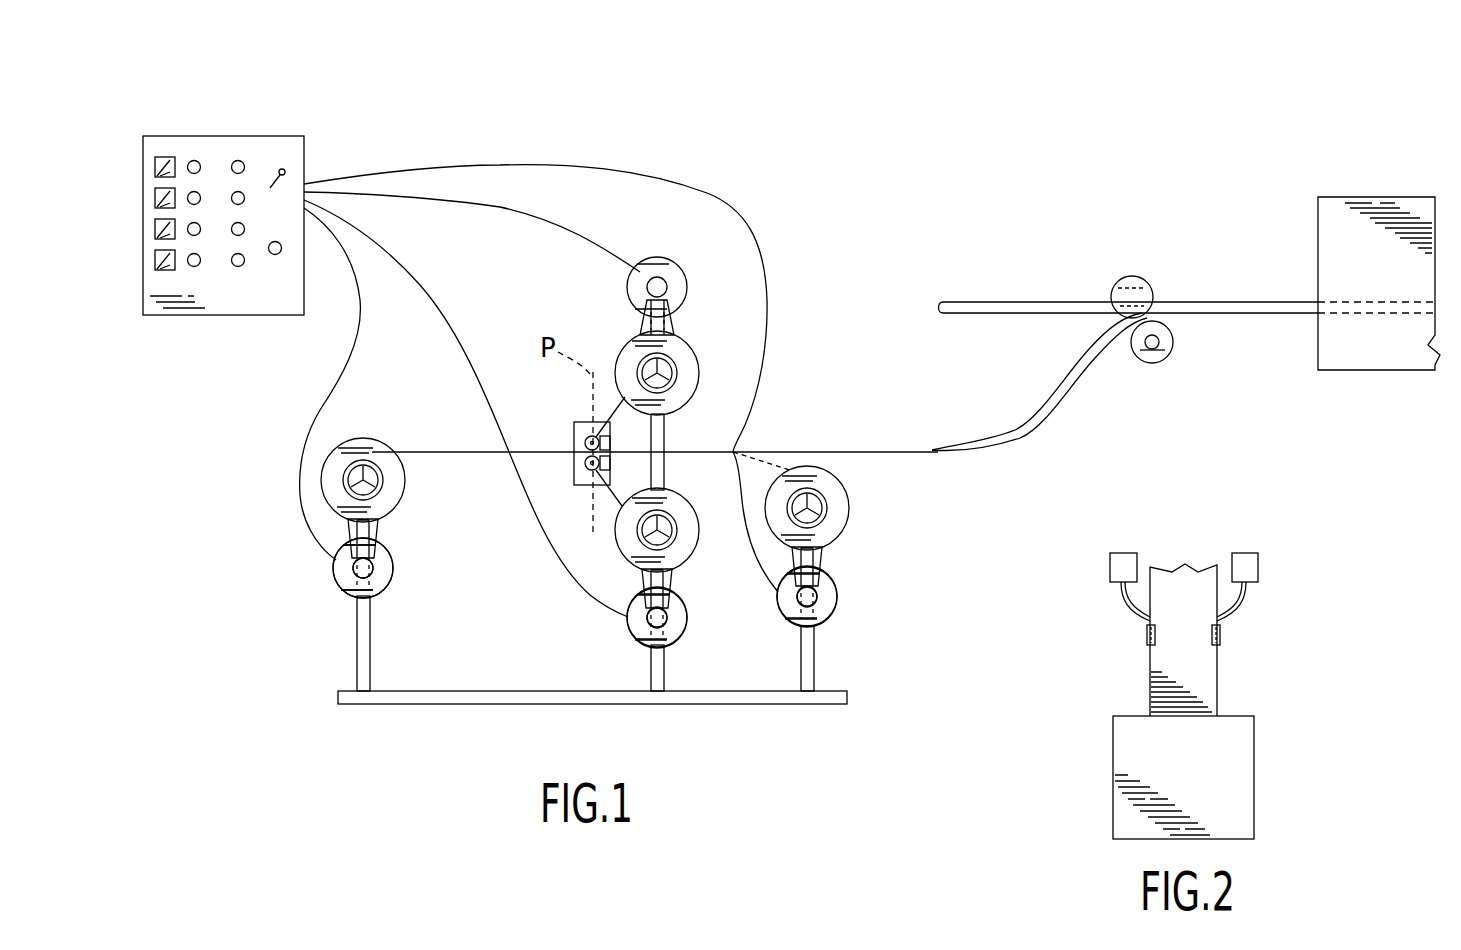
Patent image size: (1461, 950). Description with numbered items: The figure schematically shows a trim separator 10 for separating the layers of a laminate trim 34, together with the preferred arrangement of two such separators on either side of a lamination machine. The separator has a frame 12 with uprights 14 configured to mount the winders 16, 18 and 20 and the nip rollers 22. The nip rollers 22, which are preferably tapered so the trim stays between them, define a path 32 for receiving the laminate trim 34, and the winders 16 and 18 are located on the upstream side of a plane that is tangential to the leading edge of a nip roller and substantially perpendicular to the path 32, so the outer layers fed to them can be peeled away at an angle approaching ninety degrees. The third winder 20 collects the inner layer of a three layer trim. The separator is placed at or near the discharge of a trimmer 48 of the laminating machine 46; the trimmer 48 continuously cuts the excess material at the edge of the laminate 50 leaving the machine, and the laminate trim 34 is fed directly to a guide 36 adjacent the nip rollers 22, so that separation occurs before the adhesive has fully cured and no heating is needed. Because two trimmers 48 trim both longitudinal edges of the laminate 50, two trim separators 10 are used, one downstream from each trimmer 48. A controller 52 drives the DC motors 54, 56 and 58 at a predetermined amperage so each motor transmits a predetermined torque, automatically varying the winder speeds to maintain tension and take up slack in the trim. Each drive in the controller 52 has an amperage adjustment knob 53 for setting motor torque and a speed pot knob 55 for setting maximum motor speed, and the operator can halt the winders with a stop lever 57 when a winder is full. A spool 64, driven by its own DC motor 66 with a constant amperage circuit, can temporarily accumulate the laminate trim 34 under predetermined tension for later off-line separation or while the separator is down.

In FIG. 1, the trim separator 10 is at (275, 655).
In FIG. 2, the trim separator 10 is at (1110, 566).
In FIG. 1, the frame 12 is at (432, 705).
In FIG. 1, the uprights 14 is at (372, 650).
In FIG. 1, the winder 16 is at (698, 352).
In FIG. 1, the winder 18 is at (697, 546).
In FIG. 1, the winder 20 is at (352, 442).
In FIG. 1, the nip rollers 22 is at (584, 443).
In FIG. 1, the path 32 is at (705, 449).
In FIG. 1, the laminate trim 34 is at (895, 449).
In FIG. 2, the laminate trim 34 is at (1125, 610).
In FIG. 1, the guide 36 is at (608, 490).
In FIG. 1, the laminating machine 46 is at (1318, 235).
In FIG. 2, the laminating machine 46 is at (1254, 770).
In FIG. 1, the trimmer 48 is at (1128, 276).
In FIG. 2, the trimmer 48 is at (1148, 643).
In FIG. 1, the laminate 50 is at (1034, 300).
In FIG. 2, the laminate 50 is at (1180, 585).
In FIG. 1, the controller 52 is at (260, 176).
In FIG. 1, the amperage adjustment knob 53 is at (194, 160).
In FIG. 1, the DC motor 54 is at (680, 262).
In FIG. 1, the speed pot knob 55 is at (238, 160).
In FIG. 1, the DC motor 56 is at (628, 625).
In FIG. 1, the stop lever 57 is at (285, 167).
In FIG. 1, the DC motor 58 is at (335, 568).
In FIG. 1, the spool 64 is at (845, 530).
In FIG. 1, the DC motor 66 is at (836, 610).